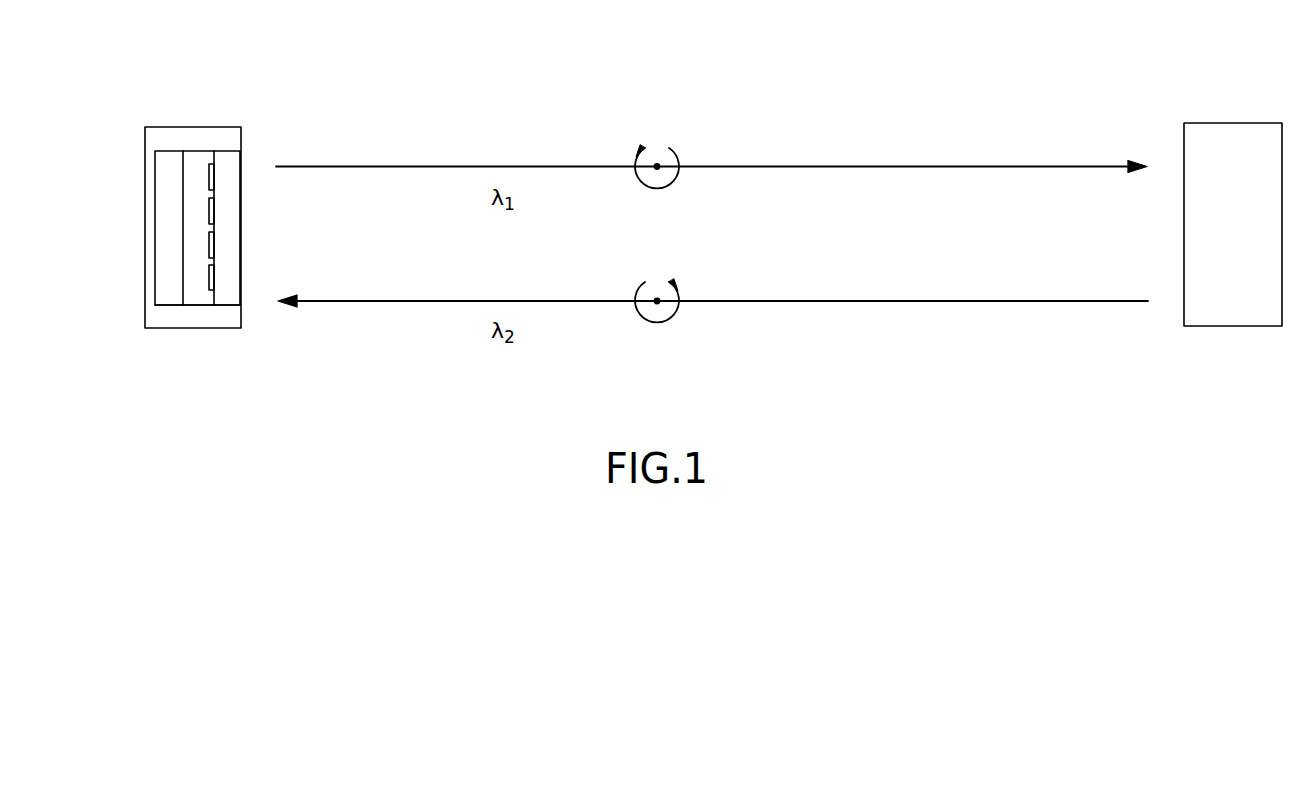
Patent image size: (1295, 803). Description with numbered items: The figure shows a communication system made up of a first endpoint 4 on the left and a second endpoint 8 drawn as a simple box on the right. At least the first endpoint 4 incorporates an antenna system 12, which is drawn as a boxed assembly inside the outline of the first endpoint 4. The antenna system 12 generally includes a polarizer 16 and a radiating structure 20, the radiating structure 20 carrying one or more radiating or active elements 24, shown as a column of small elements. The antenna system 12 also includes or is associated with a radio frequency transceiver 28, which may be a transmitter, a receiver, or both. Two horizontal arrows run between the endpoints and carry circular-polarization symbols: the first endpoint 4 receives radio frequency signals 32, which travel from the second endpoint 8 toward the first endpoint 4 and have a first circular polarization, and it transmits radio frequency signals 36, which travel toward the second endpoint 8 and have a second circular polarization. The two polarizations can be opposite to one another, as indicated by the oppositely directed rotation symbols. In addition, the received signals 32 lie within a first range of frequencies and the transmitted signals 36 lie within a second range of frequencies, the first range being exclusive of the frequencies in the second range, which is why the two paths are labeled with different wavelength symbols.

The first endpoint 4 is at (205, 127).
The second endpoint 8 is at (1235, 123).
The antenna system 12 is at (198, 150).
The polarizer 16 is at (241, 290).
The radiating structure 20 is at (198, 306).
The radiating or active elements 24 is at (217, 174).
The radio frequency transceiver 28 is at (163, 214).
The received radio frequency signals 32 is at (828, 301).
The transmitted radio frequency signals 36 is at (845, 166).